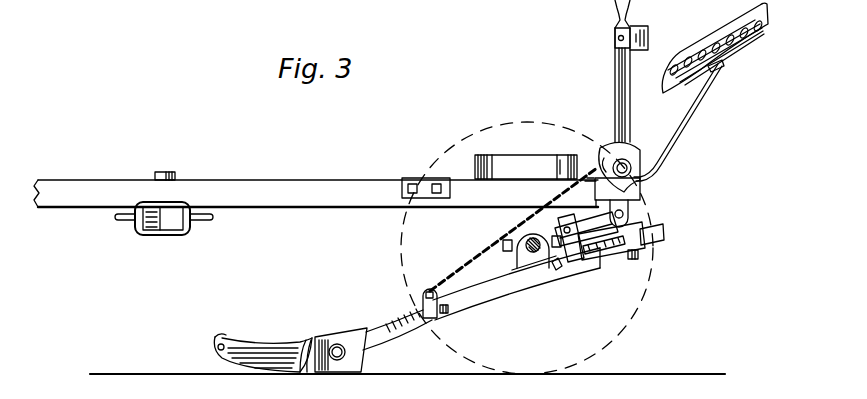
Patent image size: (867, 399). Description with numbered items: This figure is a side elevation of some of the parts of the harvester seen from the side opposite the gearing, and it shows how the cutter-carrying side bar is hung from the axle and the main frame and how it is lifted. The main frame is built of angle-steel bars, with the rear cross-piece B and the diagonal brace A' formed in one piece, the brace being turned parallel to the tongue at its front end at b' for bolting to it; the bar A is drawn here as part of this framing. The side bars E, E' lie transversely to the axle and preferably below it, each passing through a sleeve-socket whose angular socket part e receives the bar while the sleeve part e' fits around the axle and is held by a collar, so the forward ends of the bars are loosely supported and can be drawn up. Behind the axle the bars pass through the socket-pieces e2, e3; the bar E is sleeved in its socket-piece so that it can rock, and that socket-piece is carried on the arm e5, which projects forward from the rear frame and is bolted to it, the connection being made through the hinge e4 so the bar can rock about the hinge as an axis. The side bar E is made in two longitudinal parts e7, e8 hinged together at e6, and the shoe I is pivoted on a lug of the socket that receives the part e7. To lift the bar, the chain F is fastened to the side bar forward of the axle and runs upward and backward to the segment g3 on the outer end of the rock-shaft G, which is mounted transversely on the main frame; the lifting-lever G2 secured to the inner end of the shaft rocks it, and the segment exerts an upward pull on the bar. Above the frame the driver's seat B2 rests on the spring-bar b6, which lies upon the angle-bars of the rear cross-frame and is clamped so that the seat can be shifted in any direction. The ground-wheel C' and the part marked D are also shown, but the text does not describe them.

The bar A is at (316, 198).
The turned end of brace b' is at (426, 177).
The diagonal brace A' is at (510, 166).
The wheel C' is at (543, 248).
The lifting-lever G2 is at (615, 72).
The driver's seat B2 is at (712, 48).
The spring-bar b6 is at (683, 133).
The segment g3 is at (628, 151).
The rock-shaft G is at (640, 170).
The rear cross-piece B is at (649, 193).
The chain F is at (491, 245).
The arm e5 is at (590, 182).
The hinge e4 is at (606, 216).
The sleeve part of sleeve-socket e' is at (552, 239).
The side bar E' is at (664, 226).
The socket-piece e2 is at (580, 262).
The socket-piece e3 is at (638, 254).
The side bar E is at (516, 284).
The cam roller D is at (535, 252).
The socket part of sleeve-socket e is at (556, 273).
The part of side bar e8 is at (478, 284).
The part of side bar e7 is at (448, 313).
The hinge e6 is at (462, 296).
The shoe I is at (287, 351).